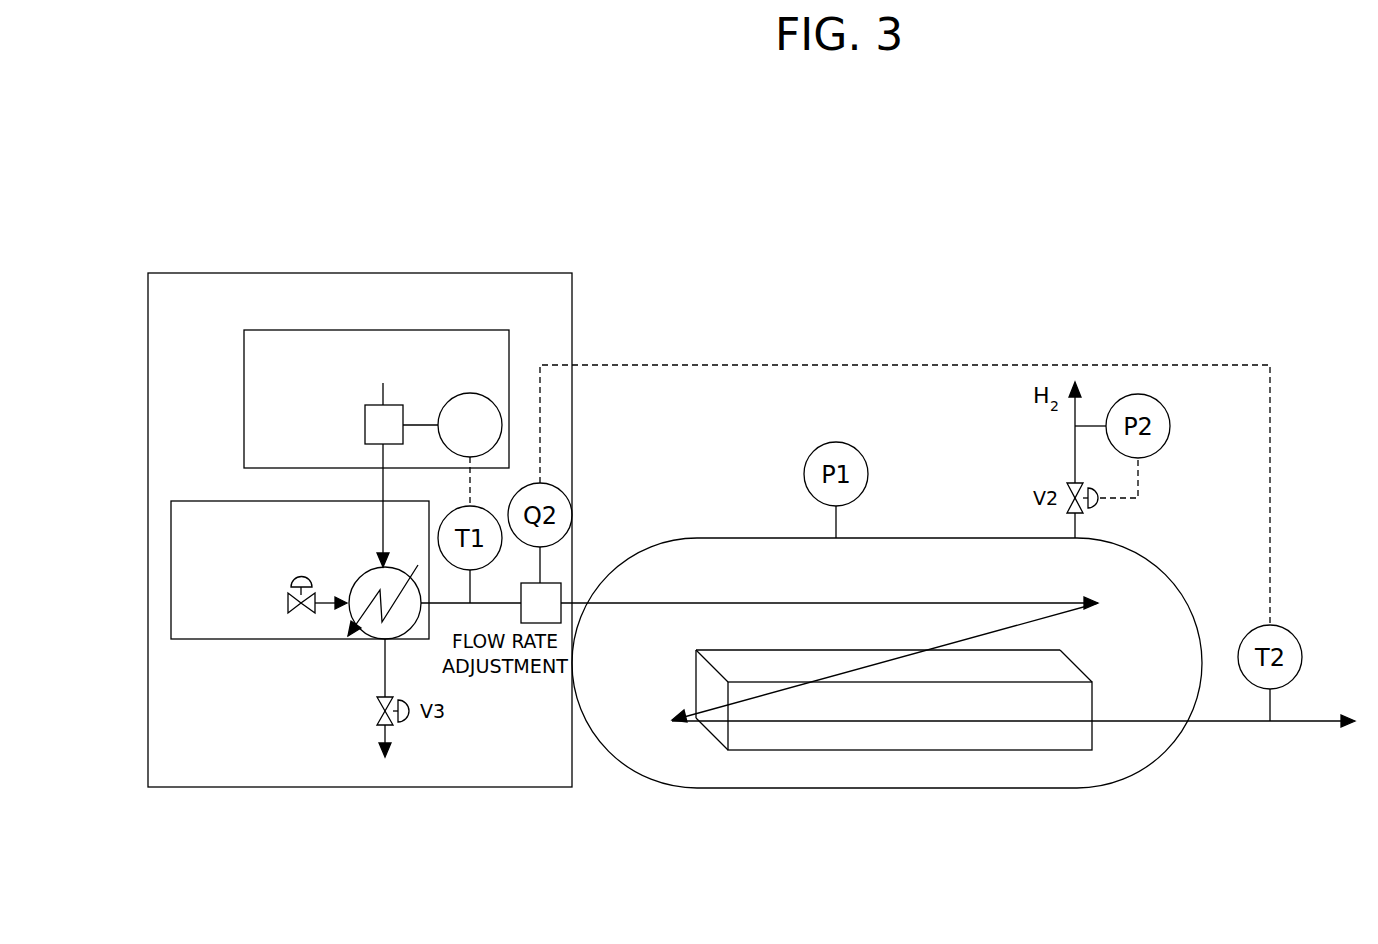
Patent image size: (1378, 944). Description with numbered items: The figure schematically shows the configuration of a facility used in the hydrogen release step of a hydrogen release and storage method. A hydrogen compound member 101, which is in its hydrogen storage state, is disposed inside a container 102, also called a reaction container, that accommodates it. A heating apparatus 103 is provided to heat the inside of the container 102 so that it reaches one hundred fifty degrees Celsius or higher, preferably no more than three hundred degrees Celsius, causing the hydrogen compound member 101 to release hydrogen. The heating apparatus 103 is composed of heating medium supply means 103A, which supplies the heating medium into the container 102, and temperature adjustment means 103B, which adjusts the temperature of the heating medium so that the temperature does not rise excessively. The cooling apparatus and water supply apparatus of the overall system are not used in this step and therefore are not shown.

The hydrogen compound member 101 is at (985, 735).
The container 102 is at (862, 790).
The heating apparatus 103 is at (349, 790).
The heating medium supply means 103A is at (229, 500).
The temperature adjustment means 103B is at (467, 330).